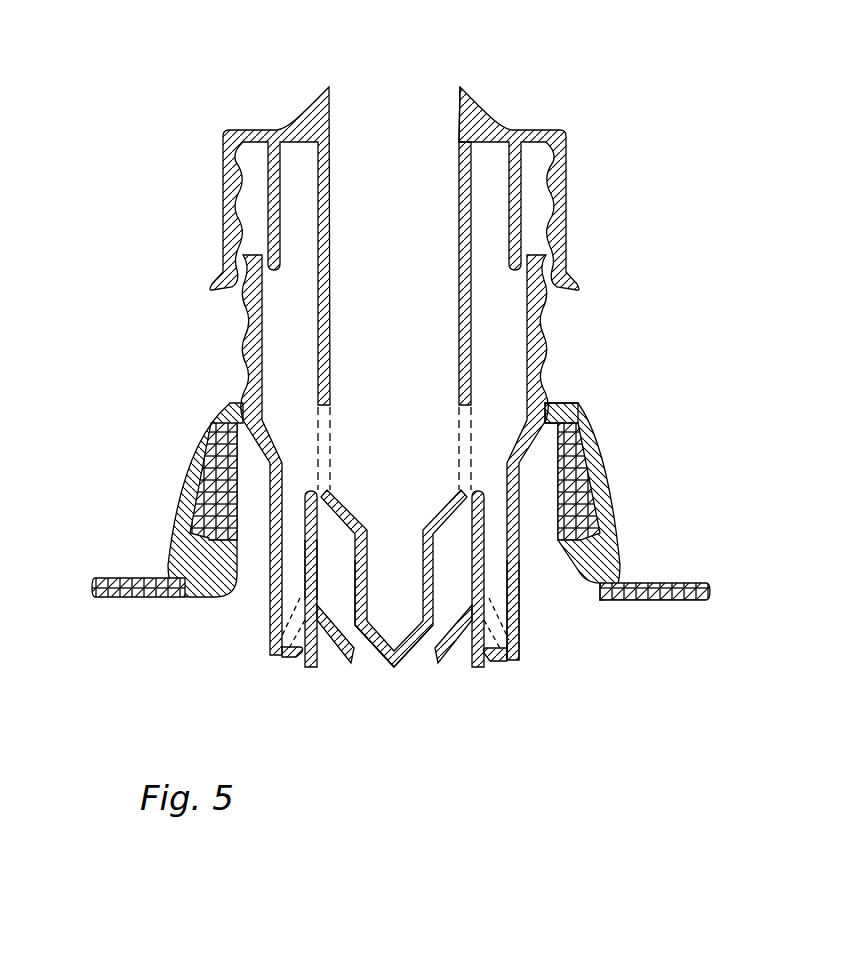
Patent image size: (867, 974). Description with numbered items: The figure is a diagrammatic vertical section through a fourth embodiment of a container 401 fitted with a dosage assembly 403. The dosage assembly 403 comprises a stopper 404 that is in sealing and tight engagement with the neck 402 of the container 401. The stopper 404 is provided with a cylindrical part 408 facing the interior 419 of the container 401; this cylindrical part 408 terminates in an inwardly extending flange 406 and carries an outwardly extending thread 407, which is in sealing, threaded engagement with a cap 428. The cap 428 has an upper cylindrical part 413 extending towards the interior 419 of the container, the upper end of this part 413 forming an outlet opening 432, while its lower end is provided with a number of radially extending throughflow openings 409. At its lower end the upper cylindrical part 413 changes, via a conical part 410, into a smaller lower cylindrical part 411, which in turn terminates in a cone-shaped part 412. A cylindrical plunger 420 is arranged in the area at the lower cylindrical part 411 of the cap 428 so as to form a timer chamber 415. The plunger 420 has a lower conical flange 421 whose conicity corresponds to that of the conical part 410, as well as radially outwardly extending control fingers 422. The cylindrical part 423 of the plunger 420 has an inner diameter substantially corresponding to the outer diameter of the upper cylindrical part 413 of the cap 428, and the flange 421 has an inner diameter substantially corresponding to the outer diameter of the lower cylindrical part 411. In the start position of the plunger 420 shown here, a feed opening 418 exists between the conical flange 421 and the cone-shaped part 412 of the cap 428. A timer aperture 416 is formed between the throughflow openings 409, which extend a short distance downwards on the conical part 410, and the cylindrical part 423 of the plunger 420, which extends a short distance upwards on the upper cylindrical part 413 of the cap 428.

The container 401 is at (670, 583).
The neck 402 is at (590, 502).
The dosage assembly 403 is at (578, 404).
The stopper 404 is at (611, 466).
The inwardly extending flange 406 is at (500, 660).
The outwardly extending thread 407 is at (547, 312).
The cylindrical part 408 is at (520, 606).
The throughflow openings 409 is at (460, 420).
The conical part 410 is at (438, 500).
The lower cylindrical part 411 is at (430, 572).
The cone-shaped part 412 is at (412, 650).
The upper cylindrical part 413 is at (459, 233).
The timer chamber 415 is at (520, 632).
The timer aperture 416 is at (316, 491).
The feed opening 418 is at (362, 645).
The interior 419 is at (465, 761).
The cylindrical plunger 420 is at (307, 583).
The conical flange 421 is at (338, 648).
The control fingers 422 is at (280, 630).
The cylindrical part 423 is at (305, 550).
The cap 428 is at (563, 131).
The outlet opening 432 is at (458, 96).